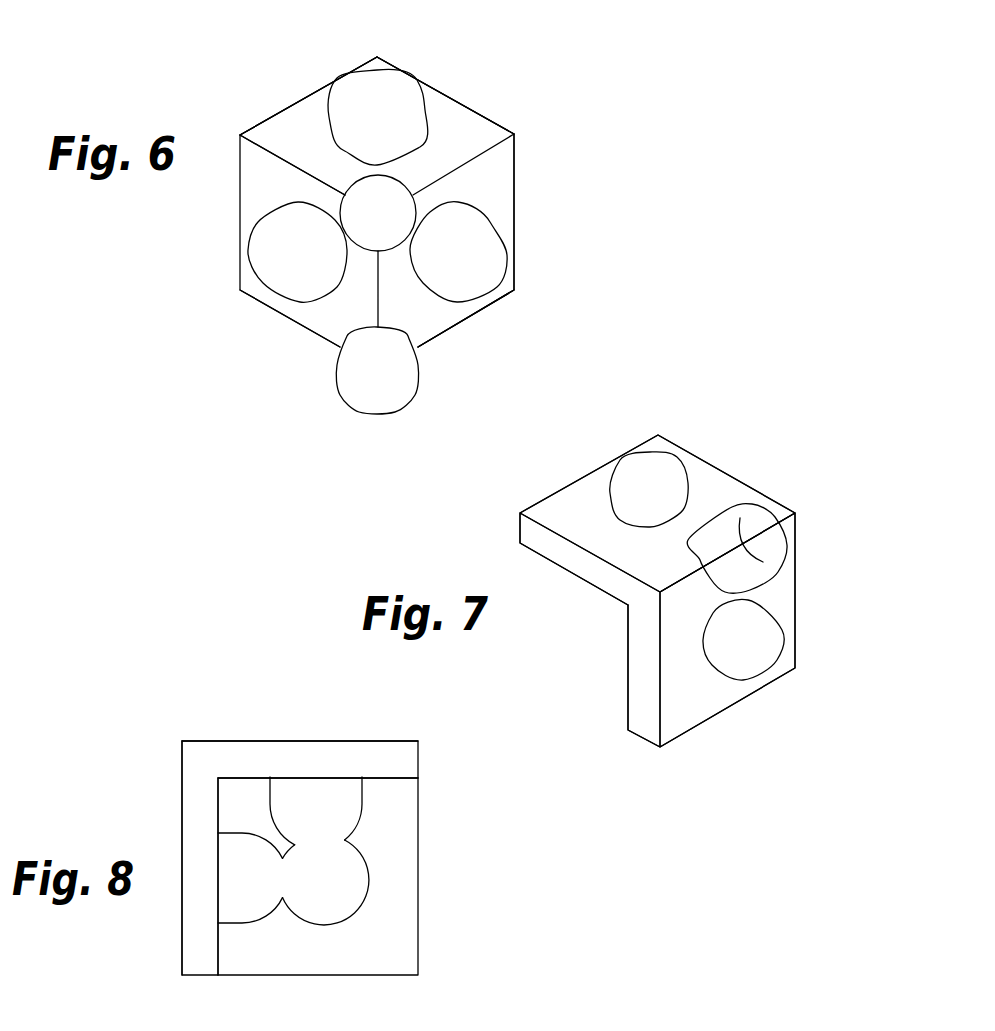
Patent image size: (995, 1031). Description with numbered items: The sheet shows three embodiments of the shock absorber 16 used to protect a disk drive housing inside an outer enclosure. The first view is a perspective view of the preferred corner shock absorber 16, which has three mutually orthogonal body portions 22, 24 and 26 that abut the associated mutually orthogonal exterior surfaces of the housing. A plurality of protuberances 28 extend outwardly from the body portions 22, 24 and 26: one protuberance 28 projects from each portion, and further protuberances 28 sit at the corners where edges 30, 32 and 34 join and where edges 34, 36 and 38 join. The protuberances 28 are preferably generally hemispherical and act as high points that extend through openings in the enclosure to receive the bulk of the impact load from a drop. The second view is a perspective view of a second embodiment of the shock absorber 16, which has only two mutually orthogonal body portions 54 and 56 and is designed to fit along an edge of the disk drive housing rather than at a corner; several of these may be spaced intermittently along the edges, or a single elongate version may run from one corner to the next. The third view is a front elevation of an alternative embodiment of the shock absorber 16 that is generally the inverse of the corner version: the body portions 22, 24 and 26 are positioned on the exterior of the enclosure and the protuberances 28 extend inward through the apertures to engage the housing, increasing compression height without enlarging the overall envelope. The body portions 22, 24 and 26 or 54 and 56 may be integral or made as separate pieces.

In FIG. 7, the shock absorber 16 is at (690, 420).
In FIG. 6, the body portion 22 is at (258, 172).
In FIG. 8, the body portion 22 is at (418, 875).
In FIG. 6, the body portion 24 is at (492, 173).
In FIG. 8, the body portion 24 is at (182, 822).
In FIG. 6, the body portion 26 is at (433, 107).
In FIG. 8, the body portion 26 is at (338, 740).
In FIG. 6, the protuberance 28 is at (380, 88).
In FIG. 7, the protuberance 28 is at (637, 482).
In FIG. 8, the protuberance 28 is at (340, 795).
In FIG. 6, the edge 30 is at (277, 152).
In FIG. 6, the edge 32 is at (483, 150).
In FIG. 6, the edge 34 is at (375, 302).
In FIG. 6, the edge 36 is at (292, 322).
In FIG. 6, the edge 38 is at (445, 332).
In FIG. 7, the body portion 54 is at (712, 483).
In FIG. 7, the body portion 56 is at (777, 588).